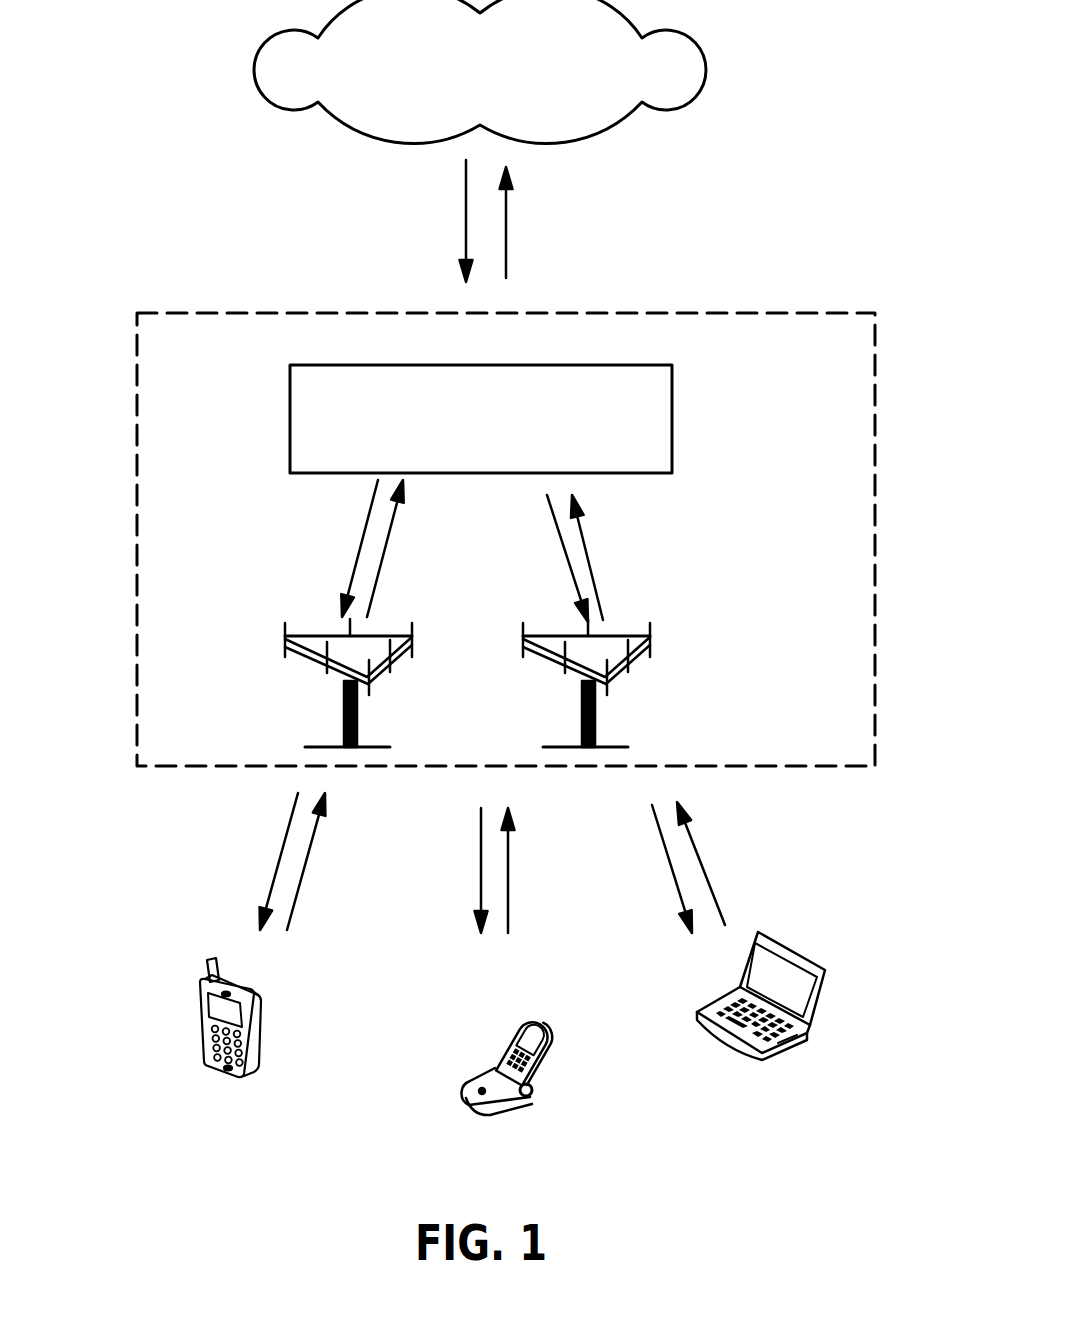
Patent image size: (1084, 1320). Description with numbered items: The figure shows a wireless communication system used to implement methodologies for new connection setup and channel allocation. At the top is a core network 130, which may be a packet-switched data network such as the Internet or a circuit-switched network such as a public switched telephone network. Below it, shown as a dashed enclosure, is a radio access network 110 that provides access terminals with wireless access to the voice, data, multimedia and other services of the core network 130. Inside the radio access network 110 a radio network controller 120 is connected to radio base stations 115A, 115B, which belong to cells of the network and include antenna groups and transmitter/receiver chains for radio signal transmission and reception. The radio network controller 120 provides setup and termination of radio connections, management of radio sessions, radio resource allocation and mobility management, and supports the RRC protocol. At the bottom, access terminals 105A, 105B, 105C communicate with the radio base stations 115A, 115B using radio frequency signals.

The core network 130 is at (707, 63).
The radio access network 110 is at (223, 313).
The radio network controller 120 is at (672, 400).
The radio base station 115A is at (305, 636).
The radio base station 115B is at (615, 637).
The access terminal 105A is at (198, 957).
The access terminal 105B is at (497, 1022).
The access terminal 105C is at (793, 953).